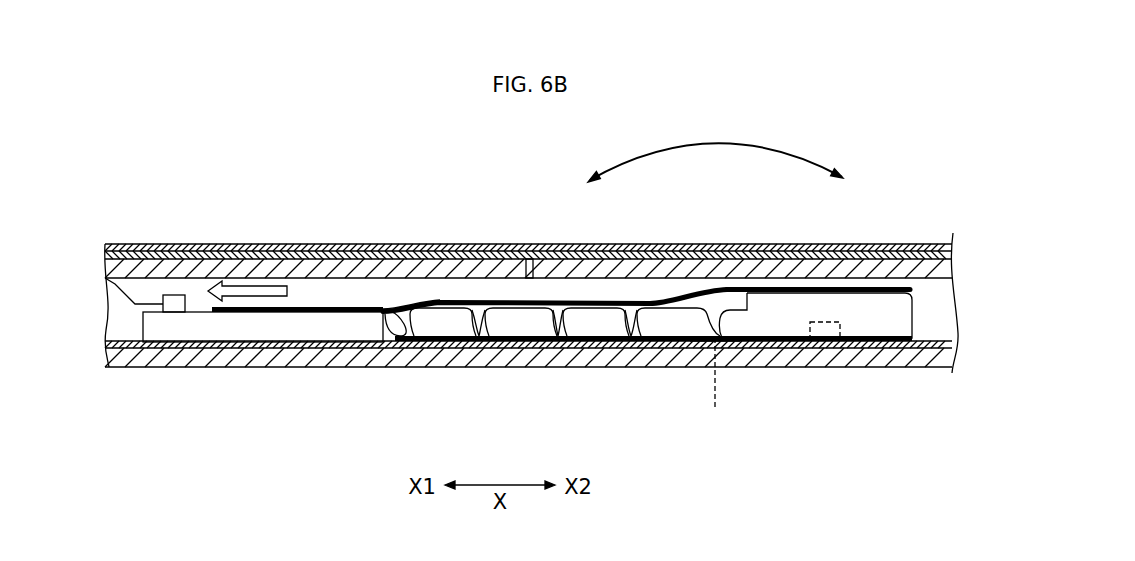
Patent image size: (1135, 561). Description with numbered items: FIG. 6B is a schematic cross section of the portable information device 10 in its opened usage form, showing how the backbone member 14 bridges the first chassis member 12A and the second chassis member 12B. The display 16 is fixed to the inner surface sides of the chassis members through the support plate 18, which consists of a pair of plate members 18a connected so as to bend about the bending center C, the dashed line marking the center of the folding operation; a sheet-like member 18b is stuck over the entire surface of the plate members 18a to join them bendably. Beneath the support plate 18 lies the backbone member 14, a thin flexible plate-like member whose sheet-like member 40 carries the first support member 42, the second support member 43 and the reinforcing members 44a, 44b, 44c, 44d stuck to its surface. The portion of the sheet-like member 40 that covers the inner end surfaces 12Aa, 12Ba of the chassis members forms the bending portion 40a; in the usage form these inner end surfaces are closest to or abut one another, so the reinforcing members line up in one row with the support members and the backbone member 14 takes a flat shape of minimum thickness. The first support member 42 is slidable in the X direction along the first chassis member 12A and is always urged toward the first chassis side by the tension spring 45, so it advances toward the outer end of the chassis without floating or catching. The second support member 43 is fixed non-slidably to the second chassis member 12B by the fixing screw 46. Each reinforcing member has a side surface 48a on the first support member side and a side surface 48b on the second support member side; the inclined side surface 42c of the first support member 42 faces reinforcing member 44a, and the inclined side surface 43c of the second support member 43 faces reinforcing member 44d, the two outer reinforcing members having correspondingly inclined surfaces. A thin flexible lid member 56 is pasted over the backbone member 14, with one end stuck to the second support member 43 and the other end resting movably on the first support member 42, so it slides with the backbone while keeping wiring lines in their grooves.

The portable information device 10 is at (158, 136).
The first chassis member 12A is at (304, 377).
The inner end surface 12Aa is at (726, 346).
The second chassis member 12B is at (914, 378).
The inner end surface 12Ba is at (703, 346).
The backbone member 14 is at (385, 295).
The display 16 is at (396, 307).
The support plate 18 is at (305, 235).
The plate member 18a is at (247, 268).
The sheet-like member 18b is at (132, 248).
The sheet-like member 40 is at (234, 342).
The bending portion 40a is at (478, 338).
The first support member 42 is at (196, 322).
The side surface 42c is at (400, 330).
The second support member 43 is at (875, 305).
The side surface 43c is at (735, 306).
The reinforcing member 44a is at (440, 325).
The reinforcing member 44b is at (515, 325).
The reinforcing member 44c is at (595, 325).
The reinforcing member 44d is at (660, 325).
The tension spring 45 is at (113, 292).
The fixing screw 46 is at (828, 340).
The side surface 48a is at (414, 308).
The side surface 48b is at (478, 310).
The lid member 56 is at (898, 291).
The bending center C is at (714, 387).